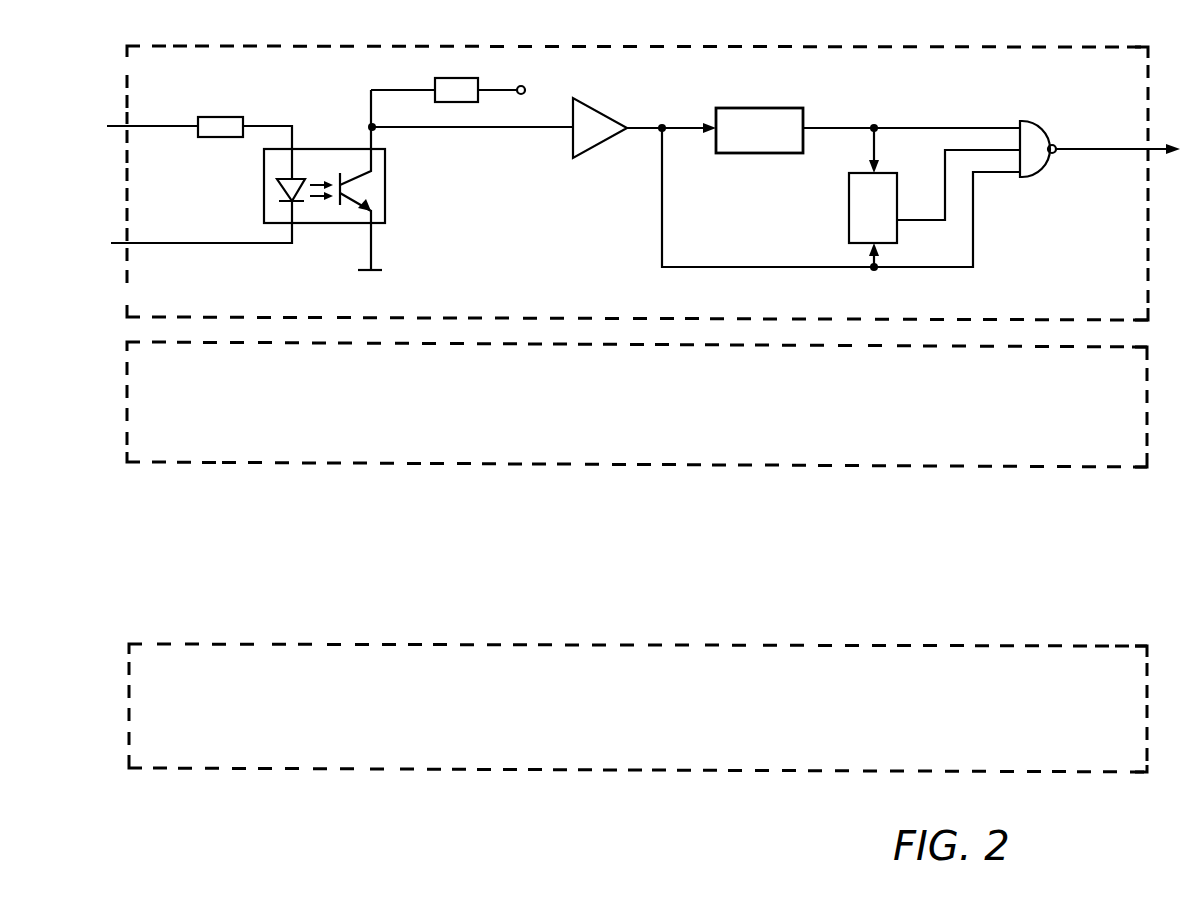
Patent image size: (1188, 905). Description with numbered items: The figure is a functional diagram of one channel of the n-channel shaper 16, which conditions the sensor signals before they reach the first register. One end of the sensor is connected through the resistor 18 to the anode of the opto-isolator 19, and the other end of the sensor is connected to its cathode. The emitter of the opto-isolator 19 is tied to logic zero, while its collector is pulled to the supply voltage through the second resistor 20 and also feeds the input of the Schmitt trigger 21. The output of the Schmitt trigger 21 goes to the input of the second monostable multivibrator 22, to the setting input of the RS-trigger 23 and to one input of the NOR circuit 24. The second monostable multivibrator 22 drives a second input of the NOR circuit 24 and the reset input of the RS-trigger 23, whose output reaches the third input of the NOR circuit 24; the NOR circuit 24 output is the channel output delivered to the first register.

The shaper 16 is at (637, 409).
The resistor 18 is at (245, 117).
The opto-isolator 19 is at (324, 180).
The second resistor 20 is at (471, 78).
The Schmitt trigger 21 is at (606, 120).
The second monostable multivibrator 22 is at (759, 130).
The RS-trigger 23 is at (873, 197).
The NOR circuit 24 is at (1100, 167).